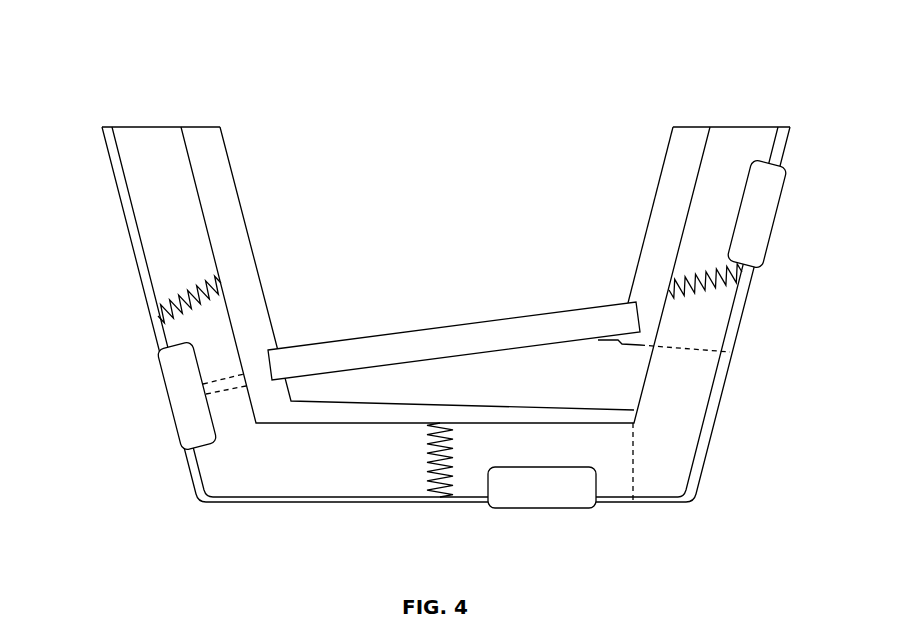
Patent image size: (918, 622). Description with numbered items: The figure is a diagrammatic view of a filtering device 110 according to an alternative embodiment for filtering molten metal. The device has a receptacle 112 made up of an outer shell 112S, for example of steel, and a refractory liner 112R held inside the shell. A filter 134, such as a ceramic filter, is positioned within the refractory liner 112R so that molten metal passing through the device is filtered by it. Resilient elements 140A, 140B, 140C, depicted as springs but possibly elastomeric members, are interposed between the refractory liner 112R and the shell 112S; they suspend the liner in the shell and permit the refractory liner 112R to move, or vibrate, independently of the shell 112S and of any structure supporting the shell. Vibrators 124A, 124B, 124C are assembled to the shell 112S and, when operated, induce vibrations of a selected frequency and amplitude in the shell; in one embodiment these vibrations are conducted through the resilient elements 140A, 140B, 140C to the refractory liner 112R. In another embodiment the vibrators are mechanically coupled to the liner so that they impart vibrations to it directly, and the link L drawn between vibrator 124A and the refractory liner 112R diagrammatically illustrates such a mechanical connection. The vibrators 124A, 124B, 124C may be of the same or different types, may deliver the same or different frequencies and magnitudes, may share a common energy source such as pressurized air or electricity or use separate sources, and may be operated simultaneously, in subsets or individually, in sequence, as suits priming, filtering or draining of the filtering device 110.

The filtering device 110 is at (120, 58).
The receptacle 112 is at (100, 156).
The outer shell 112S is at (114, 186).
The refractory liner 112R is at (222, 183).
The filter 134 is at (490, 320).
The vibrator 124A is at (178, 398).
The vibrator 124B is at (543, 495).
The vibrator 124C is at (770, 200).
The resilient element 140A is at (158, 314).
The resilient element 140B is at (443, 497).
The resilient element 140C is at (743, 287).
The link L is at (228, 393).